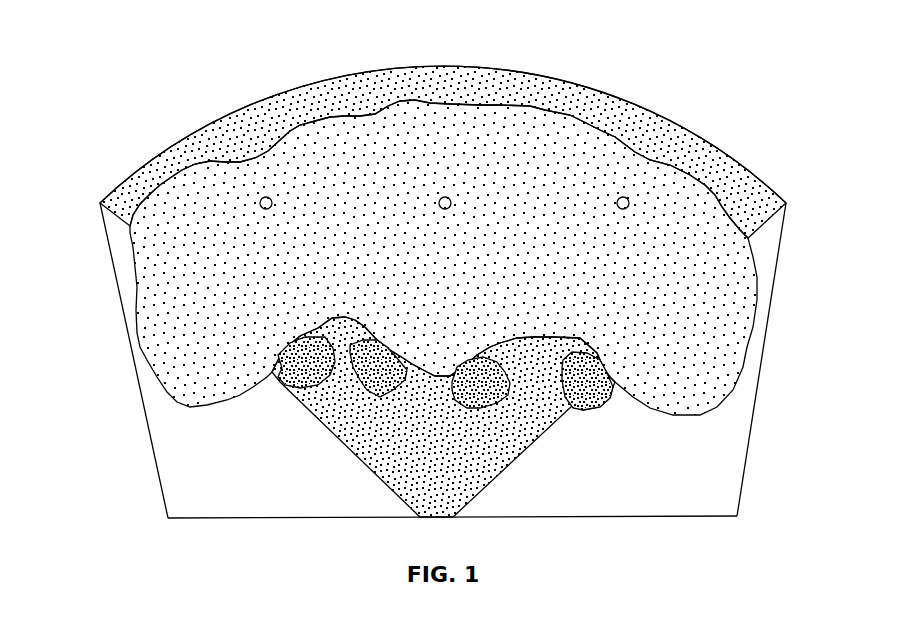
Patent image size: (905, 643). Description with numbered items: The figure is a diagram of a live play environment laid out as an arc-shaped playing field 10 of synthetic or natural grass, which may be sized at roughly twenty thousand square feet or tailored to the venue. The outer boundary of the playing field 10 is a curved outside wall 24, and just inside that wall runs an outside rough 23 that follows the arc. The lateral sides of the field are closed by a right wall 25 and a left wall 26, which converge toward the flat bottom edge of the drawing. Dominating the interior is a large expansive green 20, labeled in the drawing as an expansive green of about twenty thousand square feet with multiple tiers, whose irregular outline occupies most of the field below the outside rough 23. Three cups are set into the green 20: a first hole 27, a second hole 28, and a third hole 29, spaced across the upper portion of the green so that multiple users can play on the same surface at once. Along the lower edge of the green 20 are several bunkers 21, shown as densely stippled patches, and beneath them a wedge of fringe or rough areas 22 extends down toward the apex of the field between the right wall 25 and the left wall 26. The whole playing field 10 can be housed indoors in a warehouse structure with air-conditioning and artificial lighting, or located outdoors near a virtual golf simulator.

The playing field 10 is at (117, 95).
The green 20 is at (153, 270).
The bunkers 21 is at (300, 387).
The fringe or rough areas 22 is at (530, 433).
The outside rough 23 is at (527, 90).
The curved outside wall 24 is at (695, 133).
The right wall 25 is at (762, 362).
The left wall 26 is at (152, 452).
The first hole 27 is at (266, 197).
The second hole 28 is at (445, 197).
The third hole 29 is at (623, 197).